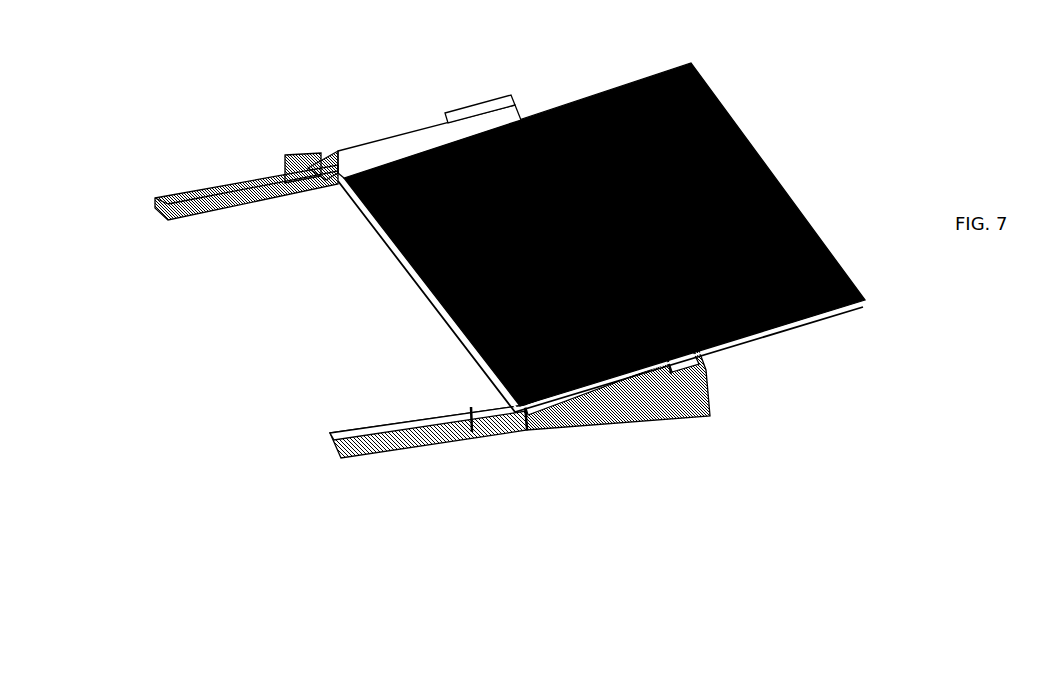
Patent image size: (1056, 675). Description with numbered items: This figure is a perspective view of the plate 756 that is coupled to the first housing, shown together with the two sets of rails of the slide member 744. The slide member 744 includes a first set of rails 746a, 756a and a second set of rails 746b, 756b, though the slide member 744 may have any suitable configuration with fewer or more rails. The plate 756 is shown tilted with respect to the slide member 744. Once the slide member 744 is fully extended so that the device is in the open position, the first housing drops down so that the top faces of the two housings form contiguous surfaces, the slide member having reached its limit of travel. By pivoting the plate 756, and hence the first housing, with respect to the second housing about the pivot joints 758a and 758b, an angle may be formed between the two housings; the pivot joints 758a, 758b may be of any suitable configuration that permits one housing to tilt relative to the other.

The slide member 744 is at (738, 402).
The rail 746a is at (405, 122).
The rail 746b is at (595, 423).
The plate 756 is at (720, 103).
The rail 756a is at (223, 183).
The rail 756b is at (410, 443).
The pivot joint 758a is at (499, 88).
The pivot joint 758b is at (690, 357).